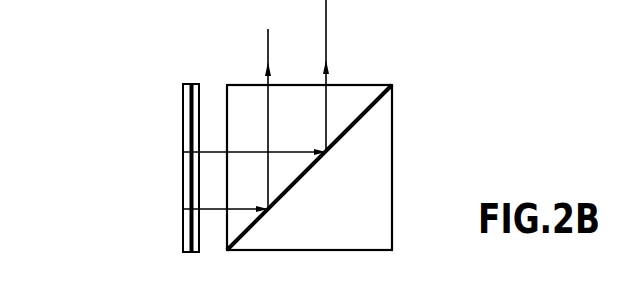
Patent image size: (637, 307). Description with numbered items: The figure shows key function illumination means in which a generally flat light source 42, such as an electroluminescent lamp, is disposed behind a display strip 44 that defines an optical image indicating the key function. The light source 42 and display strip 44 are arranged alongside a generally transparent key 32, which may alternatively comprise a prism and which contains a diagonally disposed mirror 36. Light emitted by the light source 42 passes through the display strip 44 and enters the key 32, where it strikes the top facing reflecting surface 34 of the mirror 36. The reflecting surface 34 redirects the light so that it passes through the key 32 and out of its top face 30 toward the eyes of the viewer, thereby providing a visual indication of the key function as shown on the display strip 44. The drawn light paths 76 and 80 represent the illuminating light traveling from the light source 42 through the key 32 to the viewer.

The top face 30 is at (352, 85).
The key 32 is at (436, 92).
The reflecting surface 34 is at (363, 108).
The mirror 36 is at (342, 137).
The light source 42 is at (185, 168).
The display strip 44 is at (197, 253).
The light beam 76 is at (308, 153).
The light beam 80 is at (244, 298).